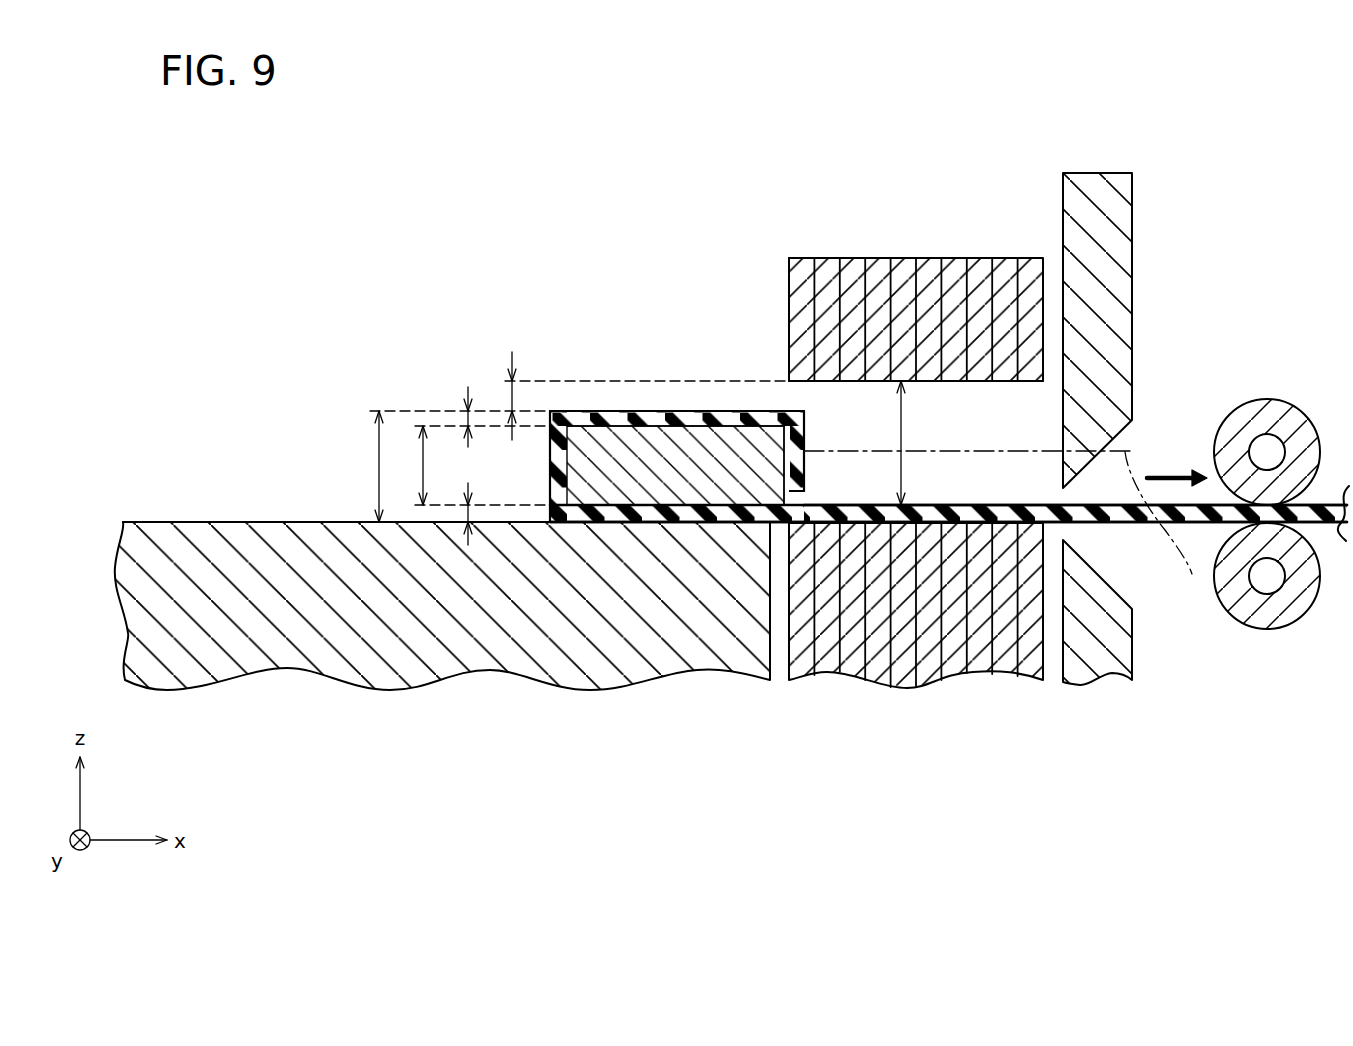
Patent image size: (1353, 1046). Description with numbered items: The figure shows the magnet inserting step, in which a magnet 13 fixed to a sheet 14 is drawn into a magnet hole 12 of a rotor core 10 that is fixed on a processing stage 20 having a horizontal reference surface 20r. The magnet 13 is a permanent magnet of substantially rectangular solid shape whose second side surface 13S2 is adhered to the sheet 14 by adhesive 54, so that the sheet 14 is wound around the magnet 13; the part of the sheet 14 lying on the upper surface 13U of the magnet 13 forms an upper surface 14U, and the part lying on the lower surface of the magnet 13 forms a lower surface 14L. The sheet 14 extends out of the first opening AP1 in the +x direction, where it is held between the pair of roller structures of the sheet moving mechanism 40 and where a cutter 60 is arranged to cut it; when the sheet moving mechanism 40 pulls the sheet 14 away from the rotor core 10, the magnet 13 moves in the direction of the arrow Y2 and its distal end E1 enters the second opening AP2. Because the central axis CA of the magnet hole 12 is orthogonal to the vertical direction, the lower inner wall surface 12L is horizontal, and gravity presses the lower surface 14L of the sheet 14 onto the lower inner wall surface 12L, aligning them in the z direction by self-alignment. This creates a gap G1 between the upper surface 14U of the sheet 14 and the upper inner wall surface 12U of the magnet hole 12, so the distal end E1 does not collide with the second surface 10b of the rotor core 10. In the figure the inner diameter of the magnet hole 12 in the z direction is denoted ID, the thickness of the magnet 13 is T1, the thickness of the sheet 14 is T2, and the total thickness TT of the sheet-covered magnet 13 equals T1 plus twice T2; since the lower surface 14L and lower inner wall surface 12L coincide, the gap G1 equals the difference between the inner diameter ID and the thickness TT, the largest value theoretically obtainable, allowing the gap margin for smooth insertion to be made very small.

The rotor core 10 is at (893, 245).
The second surface 10b is at (790, 297).
The magnet hole 12 is at (749, 338).
The upper inner wall surface 12U is at (1000, 383).
The lower inner wall surface 12L is at (930, 520).
The magnet 13 is at (603, 483).
The upper surface 13U is at (587, 427).
The second side surface 13S2 is at (800, 498).
The sheet 14 is at (1107, 513).
The upper surface 14U is at (643, 411).
The lower surface 14L is at (657, 514).
The processing stage 20 is at (445, 662).
The reference surface 20r is at (257, 518).
The sheet moving mechanism 40 is at (1313, 355).
The adhesive 54 is at (786, 456).
The cutter 60 is at (1113, 183).
The first opening AP1 is at (1154, 422).
The second opening AP2 is at (738, 364).
The central axis CA is at (1007, 531).
The distal end E1 is at (803, 472).
The gap G1 is at (512, 393).
The inner diameter ID is at (901, 436).
The thickness T1 is at (423, 465).
The thickness T2 is at (467, 417).
The thickness TT is at (442, 466).
The arrow Y2 is at (1173, 474).